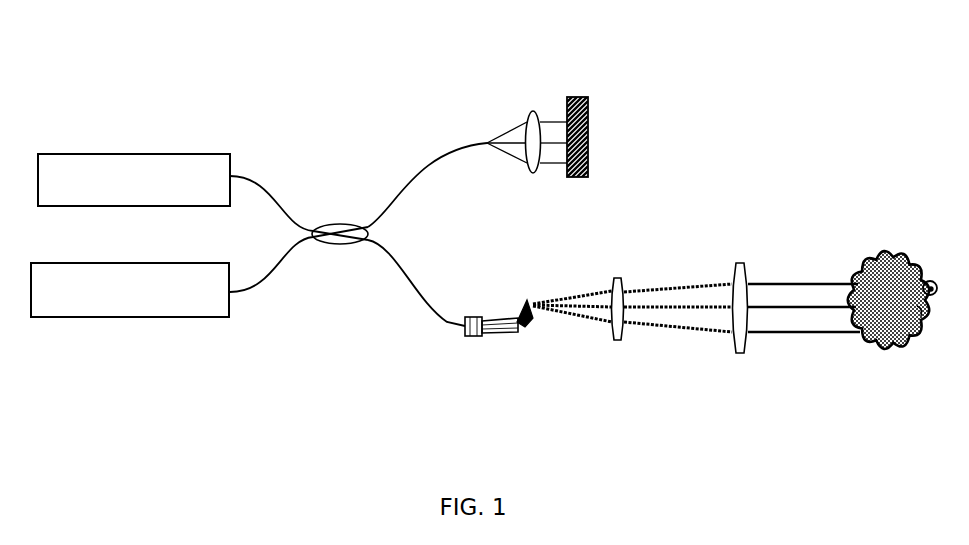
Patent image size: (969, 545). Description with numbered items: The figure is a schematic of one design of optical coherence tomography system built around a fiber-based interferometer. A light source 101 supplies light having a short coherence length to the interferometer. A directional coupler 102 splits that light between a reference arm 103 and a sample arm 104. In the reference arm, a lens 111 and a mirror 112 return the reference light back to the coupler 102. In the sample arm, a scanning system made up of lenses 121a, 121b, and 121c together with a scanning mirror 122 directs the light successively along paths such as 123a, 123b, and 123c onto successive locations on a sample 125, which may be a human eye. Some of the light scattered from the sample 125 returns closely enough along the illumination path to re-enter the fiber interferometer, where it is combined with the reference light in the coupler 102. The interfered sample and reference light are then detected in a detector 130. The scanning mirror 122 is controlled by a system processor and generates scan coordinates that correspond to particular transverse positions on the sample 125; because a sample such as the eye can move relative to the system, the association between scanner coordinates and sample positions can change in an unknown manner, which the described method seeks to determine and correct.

The light source 101 is at (130, 152).
The detector 130 is at (137, 325).
The directional coupler 102 is at (330, 243).
The reference arm 103 is at (420, 163).
The sample arm 104 is at (400, 307).
The lens 111 is at (534, 100).
The mirror 112 is at (595, 98).
The lens 121a is at (467, 345).
The scanning mirror 122 is at (525, 335).
The lens 121b is at (615, 347).
The lens 121c is at (737, 358).
The path 123a is at (763, 275).
The path 123b is at (791, 300).
The path 123c is at (817, 327).
The sample 125 is at (905, 345).